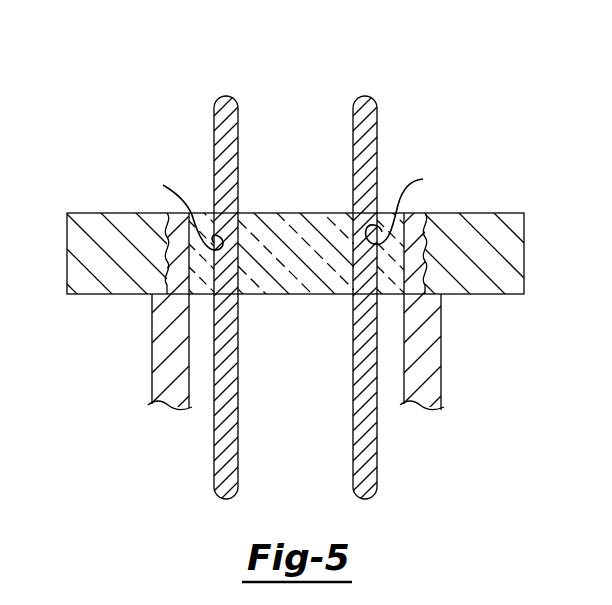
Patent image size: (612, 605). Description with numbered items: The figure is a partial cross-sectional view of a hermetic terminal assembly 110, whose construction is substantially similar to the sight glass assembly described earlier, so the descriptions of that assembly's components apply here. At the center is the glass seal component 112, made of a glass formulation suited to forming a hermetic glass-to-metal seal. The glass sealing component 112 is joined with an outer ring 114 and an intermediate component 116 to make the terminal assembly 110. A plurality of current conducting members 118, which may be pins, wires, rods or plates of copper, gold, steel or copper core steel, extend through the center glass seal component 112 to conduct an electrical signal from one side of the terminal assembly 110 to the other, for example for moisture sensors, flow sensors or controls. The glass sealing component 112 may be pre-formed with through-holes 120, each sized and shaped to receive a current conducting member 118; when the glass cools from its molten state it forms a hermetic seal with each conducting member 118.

The hermetic terminal assembly 110 is at (492, 118).
The center glass seal component 112 is at (258, 213).
The outer ring 114 is at (100, 213).
The intermediate component 116 is at (151, 369).
The current conducting member 118 is at (226, 94).
The through-hole 120 is at (294, 206).